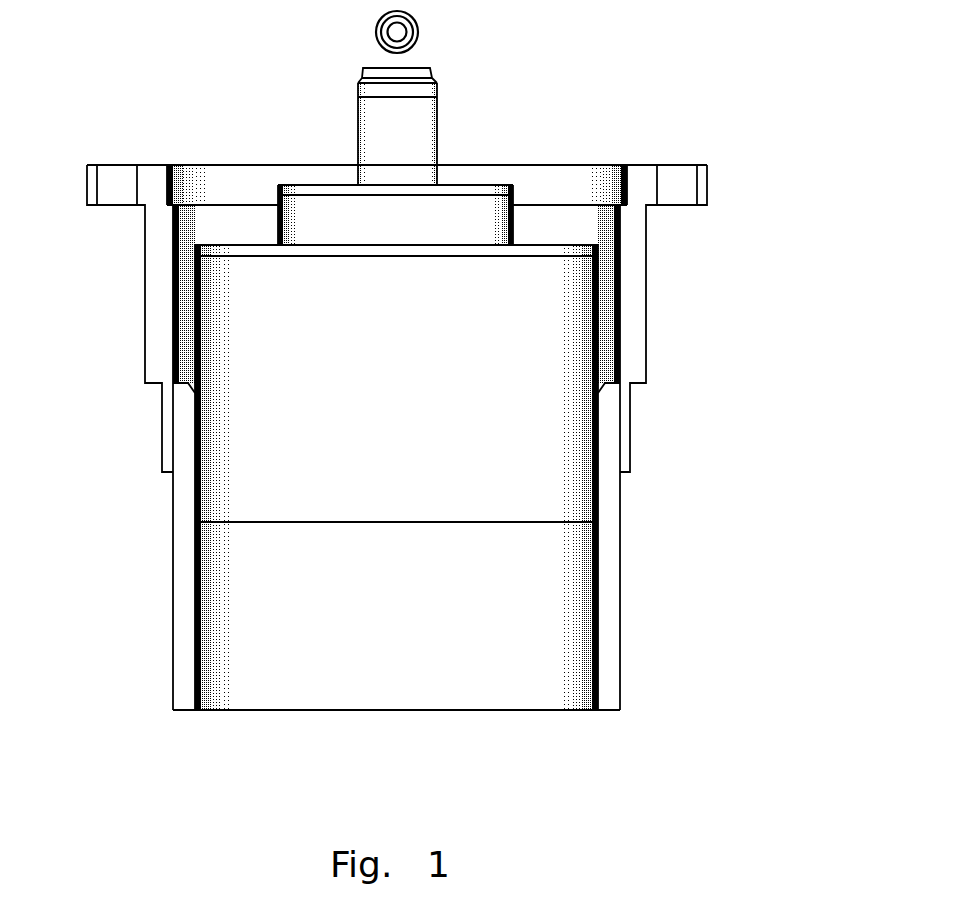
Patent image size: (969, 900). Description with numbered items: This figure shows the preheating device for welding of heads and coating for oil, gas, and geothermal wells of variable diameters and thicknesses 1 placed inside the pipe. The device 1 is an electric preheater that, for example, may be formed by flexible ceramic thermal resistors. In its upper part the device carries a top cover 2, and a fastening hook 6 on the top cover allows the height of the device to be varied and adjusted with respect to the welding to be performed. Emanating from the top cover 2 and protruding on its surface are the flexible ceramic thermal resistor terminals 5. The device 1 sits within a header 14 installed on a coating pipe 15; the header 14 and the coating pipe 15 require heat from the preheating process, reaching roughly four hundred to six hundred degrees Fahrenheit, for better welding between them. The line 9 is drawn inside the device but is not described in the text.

The preheating device for welding of heads and coating for oil, gas, and geothermal 1 is at (486, 401).
The top cover 2 is at (450, 187).
The flexible ceramic thermal resistor terminals 5 is at (388, 168).
The fastening hook 6 is at (425, 40).
The liquid level 9 is at (385, 527).
The header 14 is at (137, 297).
The coating pipe 15 is at (632, 513).